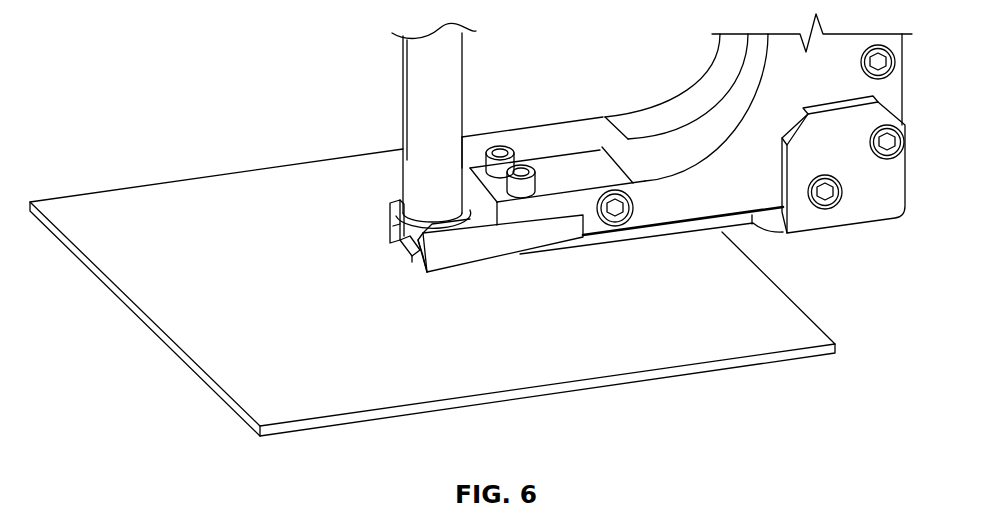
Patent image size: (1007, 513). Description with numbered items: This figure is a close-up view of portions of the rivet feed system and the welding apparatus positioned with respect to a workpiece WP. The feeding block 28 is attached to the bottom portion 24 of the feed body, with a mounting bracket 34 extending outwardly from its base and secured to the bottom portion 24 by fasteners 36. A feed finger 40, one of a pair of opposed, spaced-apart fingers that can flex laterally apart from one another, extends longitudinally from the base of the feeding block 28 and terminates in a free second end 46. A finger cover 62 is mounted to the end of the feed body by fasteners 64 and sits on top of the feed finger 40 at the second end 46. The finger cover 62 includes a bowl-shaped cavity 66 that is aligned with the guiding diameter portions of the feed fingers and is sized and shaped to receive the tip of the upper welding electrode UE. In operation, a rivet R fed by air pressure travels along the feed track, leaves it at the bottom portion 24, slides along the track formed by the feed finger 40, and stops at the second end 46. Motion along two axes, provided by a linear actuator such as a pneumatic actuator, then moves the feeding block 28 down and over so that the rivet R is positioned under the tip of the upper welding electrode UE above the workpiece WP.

The workpiece WP is at (90, 237).
The upper welding electrode UE is at (413, 77).
The bowl-shaped cavity 66 is at (412, 229).
The rivet R is at (410, 255).
The finger cover 62 is at (472, 245).
The second end 46 is at (427, 273).
The feed finger 40 is at (592, 243).
The bottom portion 24 is at (615, 152).
The feeding block 28 is at (700, 233).
The mounting bracket 34 is at (883, 202).
The fasteners 36 is at (905, 140).
The fasteners 64 is at (488, 145).